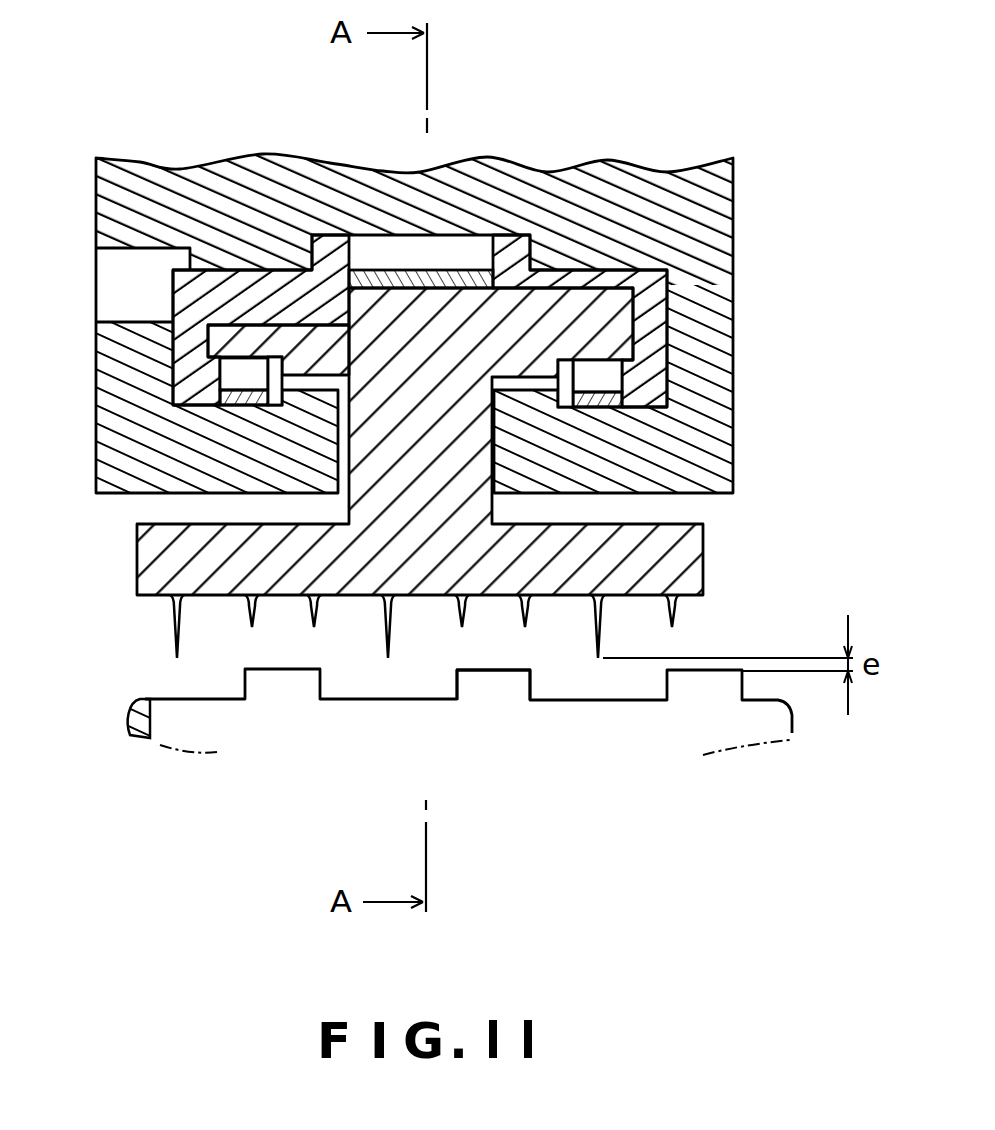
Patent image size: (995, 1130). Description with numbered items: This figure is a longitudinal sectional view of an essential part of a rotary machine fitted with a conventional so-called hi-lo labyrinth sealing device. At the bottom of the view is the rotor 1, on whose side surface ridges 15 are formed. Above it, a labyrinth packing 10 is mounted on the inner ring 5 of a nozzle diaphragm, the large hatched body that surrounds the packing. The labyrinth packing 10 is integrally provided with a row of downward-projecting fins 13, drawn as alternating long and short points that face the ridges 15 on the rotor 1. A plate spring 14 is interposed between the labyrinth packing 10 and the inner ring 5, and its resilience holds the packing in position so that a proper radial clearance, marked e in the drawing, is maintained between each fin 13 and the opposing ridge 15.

The rotor 1 is at (362, 720).
The inner ring of a nozzle diaphragm 5 is at (607, 172).
The labyrinth packing 10 is at (697, 563).
The fins 13 is at (173, 630).
The plate spring 14 is at (235, 378).
The ridges 15 is at (490, 678).